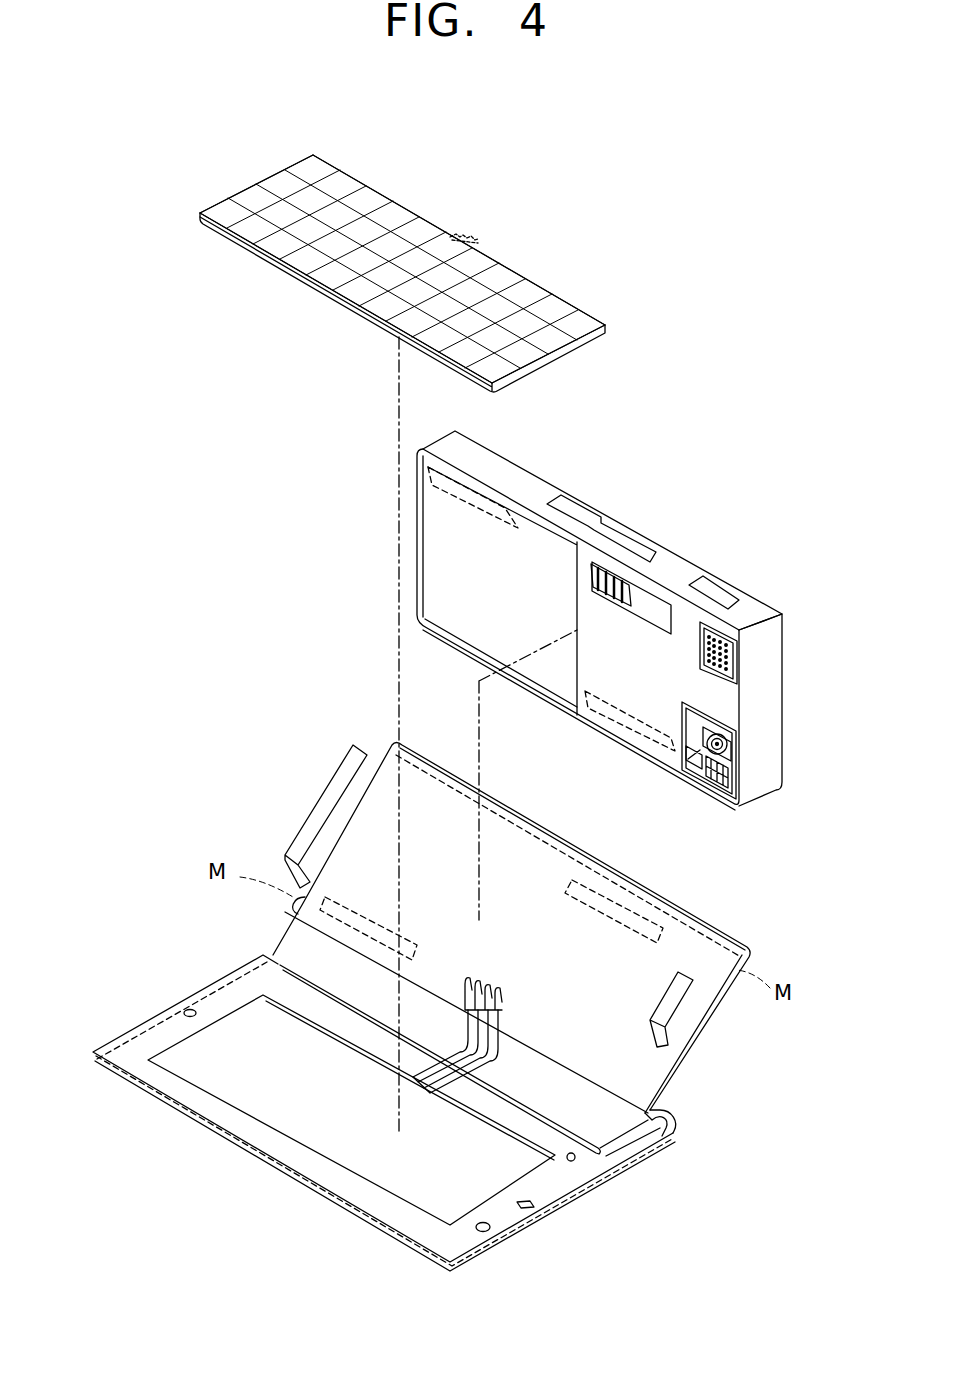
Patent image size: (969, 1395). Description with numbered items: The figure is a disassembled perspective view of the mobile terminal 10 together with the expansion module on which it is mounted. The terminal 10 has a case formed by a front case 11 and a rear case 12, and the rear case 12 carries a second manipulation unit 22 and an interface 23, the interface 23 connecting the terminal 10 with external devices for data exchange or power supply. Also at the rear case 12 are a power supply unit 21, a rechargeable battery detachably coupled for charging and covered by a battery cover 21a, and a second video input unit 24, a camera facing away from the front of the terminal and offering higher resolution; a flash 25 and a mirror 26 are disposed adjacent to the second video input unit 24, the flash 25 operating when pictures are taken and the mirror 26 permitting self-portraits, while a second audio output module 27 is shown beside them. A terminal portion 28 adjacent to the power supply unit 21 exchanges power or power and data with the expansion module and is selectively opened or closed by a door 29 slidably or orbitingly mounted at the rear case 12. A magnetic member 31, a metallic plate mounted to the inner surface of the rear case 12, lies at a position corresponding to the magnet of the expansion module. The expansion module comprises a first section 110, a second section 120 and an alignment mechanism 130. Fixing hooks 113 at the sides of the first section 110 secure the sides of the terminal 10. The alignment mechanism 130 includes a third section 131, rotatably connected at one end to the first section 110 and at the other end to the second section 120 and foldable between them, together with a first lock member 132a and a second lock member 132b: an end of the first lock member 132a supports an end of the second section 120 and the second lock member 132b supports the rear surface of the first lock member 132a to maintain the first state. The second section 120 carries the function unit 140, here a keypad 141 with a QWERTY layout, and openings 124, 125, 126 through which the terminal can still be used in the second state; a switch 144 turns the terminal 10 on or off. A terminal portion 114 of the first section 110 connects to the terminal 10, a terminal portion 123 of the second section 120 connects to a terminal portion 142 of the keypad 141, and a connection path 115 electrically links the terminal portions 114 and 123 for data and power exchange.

The function unit 140 is at (378, 257).
The keypad 141 is at (283, 178).
The terminal portion of the keypad 142 is at (467, 235).
The mobile terminal 10 is at (599, 606).
The front case 11 is at (495, 458).
The rear case 12 is at (516, 488).
The power supply unit 21 is at (426, 569).
The battery cover 21a is at (498, 641).
The magnetic member 31 is at (426, 477).
The second manipulation unit 22 is at (621, 533).
The terminal portion 28 is at (617, 576).
The door 29 is at (653, 609).
The interface 23 is at (710, 594).
The speaker 27 is at (736, 663).
The second video input unit 24 is at (725, 745).
The flash 25 is at (685, 760).
The mirror 26 is at (716, 781).
The first section 110 is at (373, 743).
The fixing hooks 113 is at (347, 768).
The terminal portion of the first section 114 is at (503, 993).
The second section 120 is at (190, 983).
The terminal portion of the second section 123 is at (413, 1088).
The opening 126 is at (186, 1010).
The opening 125 is at (487, 1229).
The opening 124 is at (528, 1207).
The connection path 115 is at (576, 1162).
The switch 144 is at (600, 1151).
The alignment mechanism 130 is at (690, 1173).
The third section 131 is at (676, 1128).
The first lock member 132a is at (622, 1137).
The second lock member 132b is at (648, 1153).